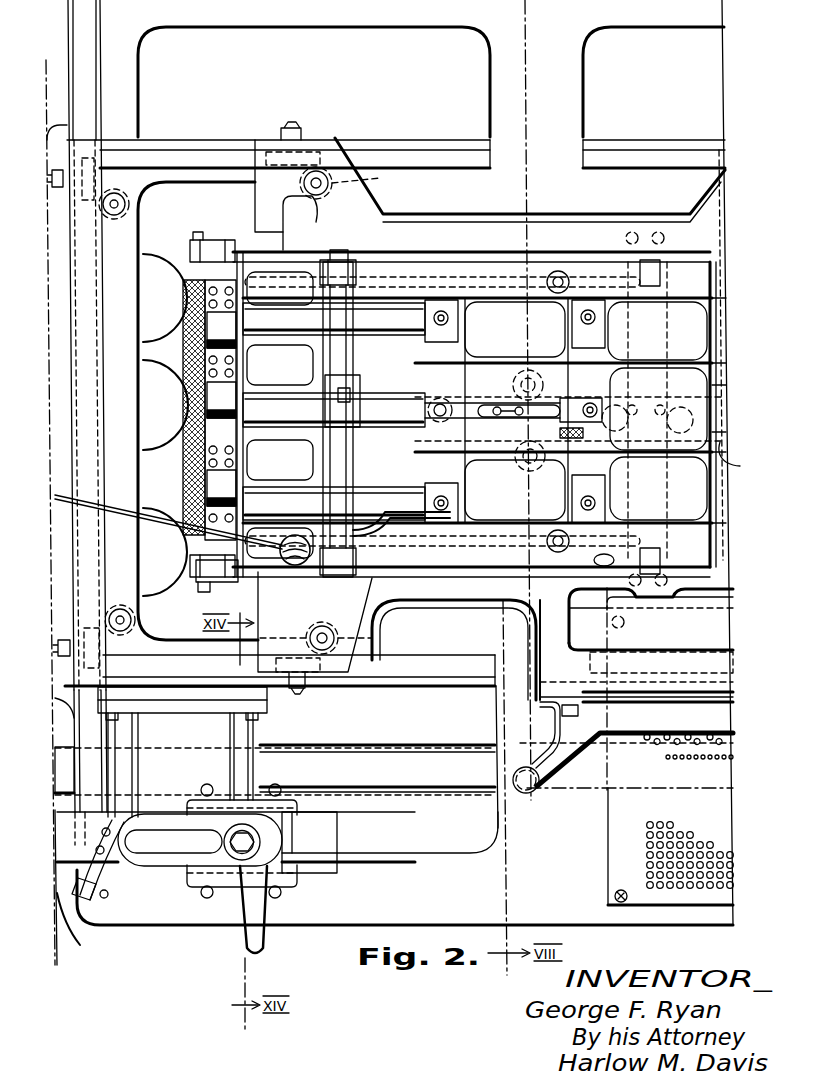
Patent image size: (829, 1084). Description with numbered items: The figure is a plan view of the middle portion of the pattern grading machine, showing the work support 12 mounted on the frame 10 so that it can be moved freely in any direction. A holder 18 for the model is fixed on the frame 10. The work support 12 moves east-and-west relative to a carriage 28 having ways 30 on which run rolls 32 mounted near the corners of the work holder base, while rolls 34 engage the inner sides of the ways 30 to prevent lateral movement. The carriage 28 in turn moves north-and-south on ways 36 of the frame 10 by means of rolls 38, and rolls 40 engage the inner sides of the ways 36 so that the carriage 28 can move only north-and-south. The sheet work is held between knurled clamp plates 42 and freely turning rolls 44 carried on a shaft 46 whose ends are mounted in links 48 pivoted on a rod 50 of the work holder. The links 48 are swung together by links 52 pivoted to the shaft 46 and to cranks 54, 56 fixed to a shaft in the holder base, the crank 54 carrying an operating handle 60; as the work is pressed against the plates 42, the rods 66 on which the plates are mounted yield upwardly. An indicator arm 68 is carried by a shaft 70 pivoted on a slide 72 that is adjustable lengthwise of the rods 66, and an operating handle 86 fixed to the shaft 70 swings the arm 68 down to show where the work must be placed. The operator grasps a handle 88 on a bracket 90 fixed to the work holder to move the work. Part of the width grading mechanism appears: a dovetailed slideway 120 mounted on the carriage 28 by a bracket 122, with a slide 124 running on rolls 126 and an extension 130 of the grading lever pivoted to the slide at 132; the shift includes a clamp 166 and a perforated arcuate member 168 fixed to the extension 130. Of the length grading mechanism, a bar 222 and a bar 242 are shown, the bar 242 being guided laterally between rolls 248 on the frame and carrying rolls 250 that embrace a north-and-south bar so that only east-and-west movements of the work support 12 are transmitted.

The frame 10 is at (718, 6).
The work support 12 is at (708, 343).
The holder 18 is at (616, 826).
The carriage 28 is at (130, 237).
The ways 30 is at (197, 152).
The rolls 32 is at (305, 152).
The rolls 34 is at (322, 625).
The ways 36 is at (93, 30).
The rolls 38 is at (83, 192).
The rolls 40 is at (116, 222).
The knurled clamp plates 42 is at (232, 378).
The rolls 44 is at (186, 323).
The shaft 46 is at (198, 574).
The links 48 is at (190, 262).
The rod 50 is at (202, 584).
The links 52 is at (412, 259).
The crank 54 is at (660, 560).
The crank 56 is at (660, 264).
The operating handle 60 is at (594, 562).
The rods 66 is at (284, 340).
The arm 68 is at (478, 410).
The shaft 70 is at (345, 292).
The slide 72 is at (320, 292).
The operating handle 86 is at (392, 516).
The handle 88 is at (531, 794).
The bracket 90 is at (630, 722).
The dovetailed slideway 120 is at (330, 866).
The bracket 122 is at (254, 740).
The slide 124 is at (200, 882).
The rolls 126 is at (298, 815).
The extension 130 is at (82, 858).
The pivot 132 is at (231, 842).
The clamp 166 is at (260, 940).
The perforated arcuate member 168 is at (64, 912).
The bar 222 is at (440, 780).
The bar 242 is at (750, 459).
The rolls 248 is at (517, 376).
The rolls 250 is at (624, 408).